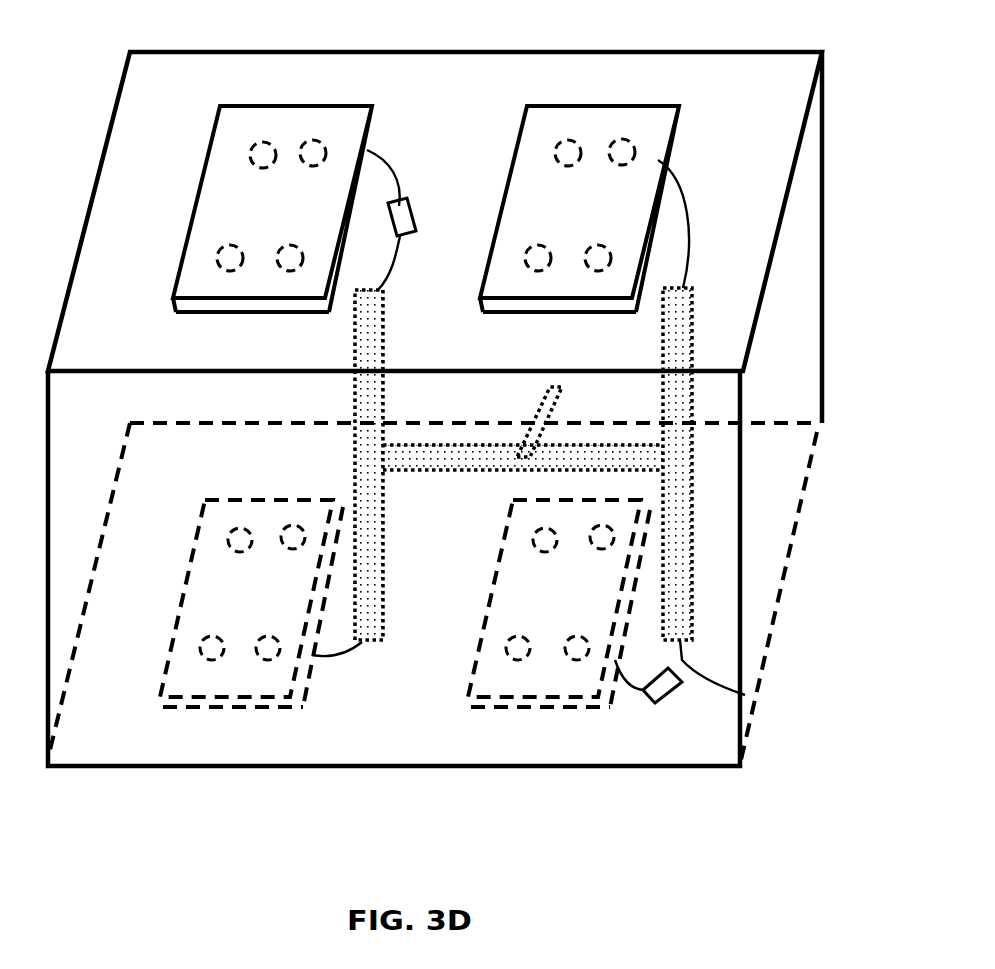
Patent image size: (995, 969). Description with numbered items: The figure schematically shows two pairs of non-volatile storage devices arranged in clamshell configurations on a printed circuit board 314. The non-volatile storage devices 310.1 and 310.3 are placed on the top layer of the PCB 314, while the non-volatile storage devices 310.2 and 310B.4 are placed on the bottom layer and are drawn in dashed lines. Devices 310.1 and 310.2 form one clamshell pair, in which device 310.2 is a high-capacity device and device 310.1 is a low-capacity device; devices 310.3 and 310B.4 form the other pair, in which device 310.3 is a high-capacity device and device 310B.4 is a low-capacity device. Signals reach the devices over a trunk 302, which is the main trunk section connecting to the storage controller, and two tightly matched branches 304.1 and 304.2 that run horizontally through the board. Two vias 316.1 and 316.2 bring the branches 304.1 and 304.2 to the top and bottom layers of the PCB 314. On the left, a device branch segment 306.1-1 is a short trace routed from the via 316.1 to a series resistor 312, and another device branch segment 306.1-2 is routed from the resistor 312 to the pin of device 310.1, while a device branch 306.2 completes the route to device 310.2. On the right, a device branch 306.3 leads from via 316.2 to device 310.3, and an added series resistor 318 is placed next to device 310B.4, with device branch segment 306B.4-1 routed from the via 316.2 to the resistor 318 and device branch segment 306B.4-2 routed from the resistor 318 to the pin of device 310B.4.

The printed circuit board 314 is at (142, 113).
The non-volatile storage device 310.1 is at (240, 128).
The non-volatile storage device 310.3 is at (547, 128).
The non-volatile storage device 310.2 is at (172, 697).
The non-volatile storage device 310B.4 is at (480, 697).
The device branch segment 306.1-2 is at (372, 150).
The device branch segment 306.1-1 is at (382, 292).
The series resistor 312 is at (410, 213).
The device branch 306.3 is at (683, 245).
The via 316.1 is at (360, 485).
The via 316.2 is at (672, 365).
The branch 304.1 is at (423, 457).
The branch 304.2 is at (583, 458).
The trunk 302 is at (557, 388).
The device branch 306.2 is at (335, 657).
The device branch segment 306B.4-1 is at (745, 695).
The device branch segment 306B.4-2 is at (618, 663).
The series resistor 318 is at (665, 700).